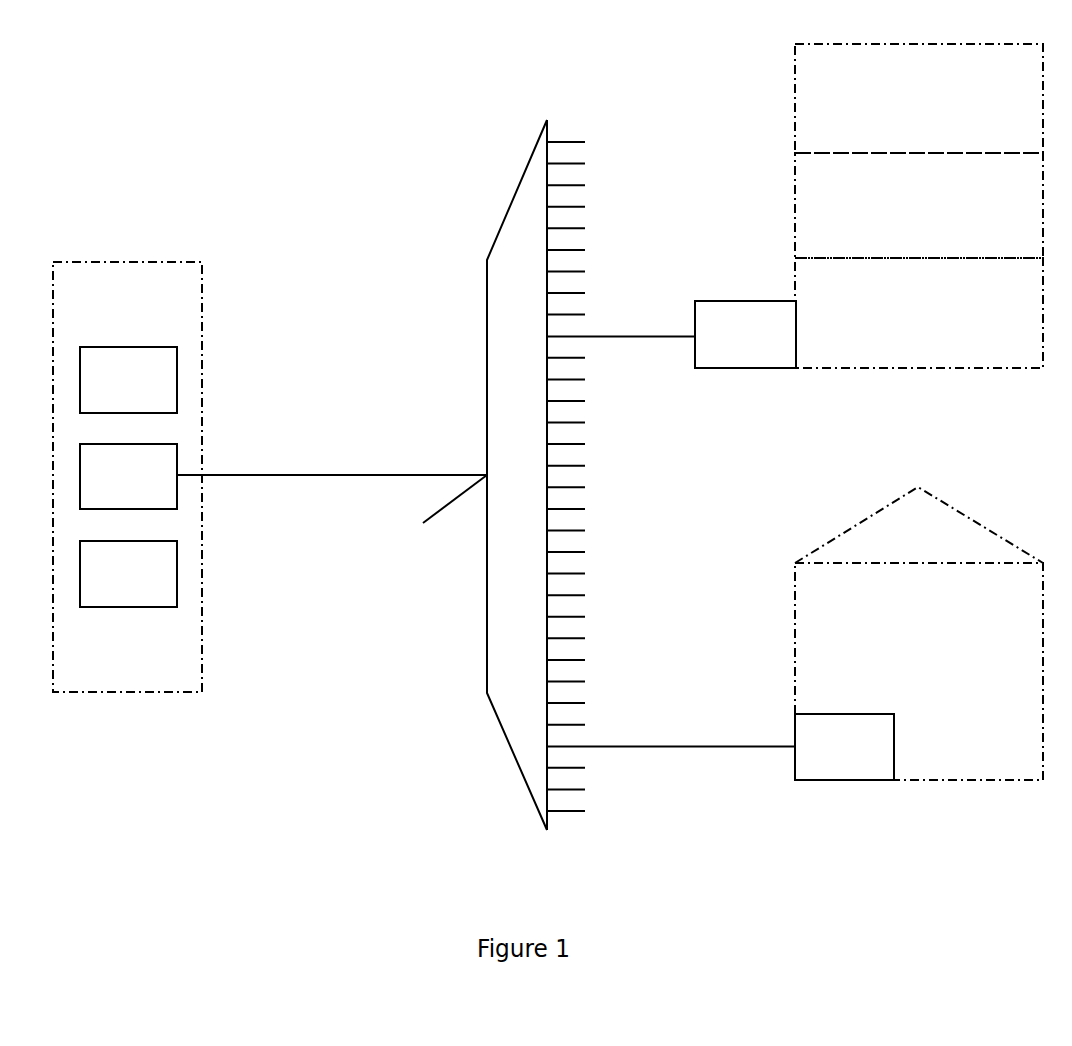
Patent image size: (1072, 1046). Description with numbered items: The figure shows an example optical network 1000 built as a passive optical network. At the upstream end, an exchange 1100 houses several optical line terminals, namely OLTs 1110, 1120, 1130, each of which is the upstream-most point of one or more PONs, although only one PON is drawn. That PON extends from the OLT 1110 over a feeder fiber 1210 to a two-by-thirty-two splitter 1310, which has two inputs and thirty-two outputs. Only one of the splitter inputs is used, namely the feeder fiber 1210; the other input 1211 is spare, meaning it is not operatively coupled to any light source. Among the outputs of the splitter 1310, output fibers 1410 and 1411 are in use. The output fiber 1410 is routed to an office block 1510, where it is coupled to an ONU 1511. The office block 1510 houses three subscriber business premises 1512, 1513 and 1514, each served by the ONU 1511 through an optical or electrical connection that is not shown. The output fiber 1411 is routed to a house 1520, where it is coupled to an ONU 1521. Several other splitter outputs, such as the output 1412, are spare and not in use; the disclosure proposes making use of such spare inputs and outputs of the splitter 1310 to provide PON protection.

The optical network 1000 is at (176, 101).
The exchange 1100 is at (127, 477).
The OLT 1110 is at (128, 476).
The OLT 1120 is at (128, 574).
The OLT 1130 is at (128, 380).
The feeder fiber 1210 is at (325, 475).
The spare input 1211 is at (437, 516).
The 2×32 splitter 1310 is at (536, 475).
The output fiber 1410 is at (620, 339).
The output fiber 1411 is at (670, 749).
The spare output 1412 is at (565, 814).
The office block 1510 is at (844, 206).
The ONU 1511 is at (745, 334).
The subscriber business premises 1512 is at (919, 98).
The subscriber business premises 1513 is at (919, 205).
The subscriber business premises 1514 is at (919, 313).
The house 1520 is at (919, 633).
The ONU 1521 is at (844, 747).